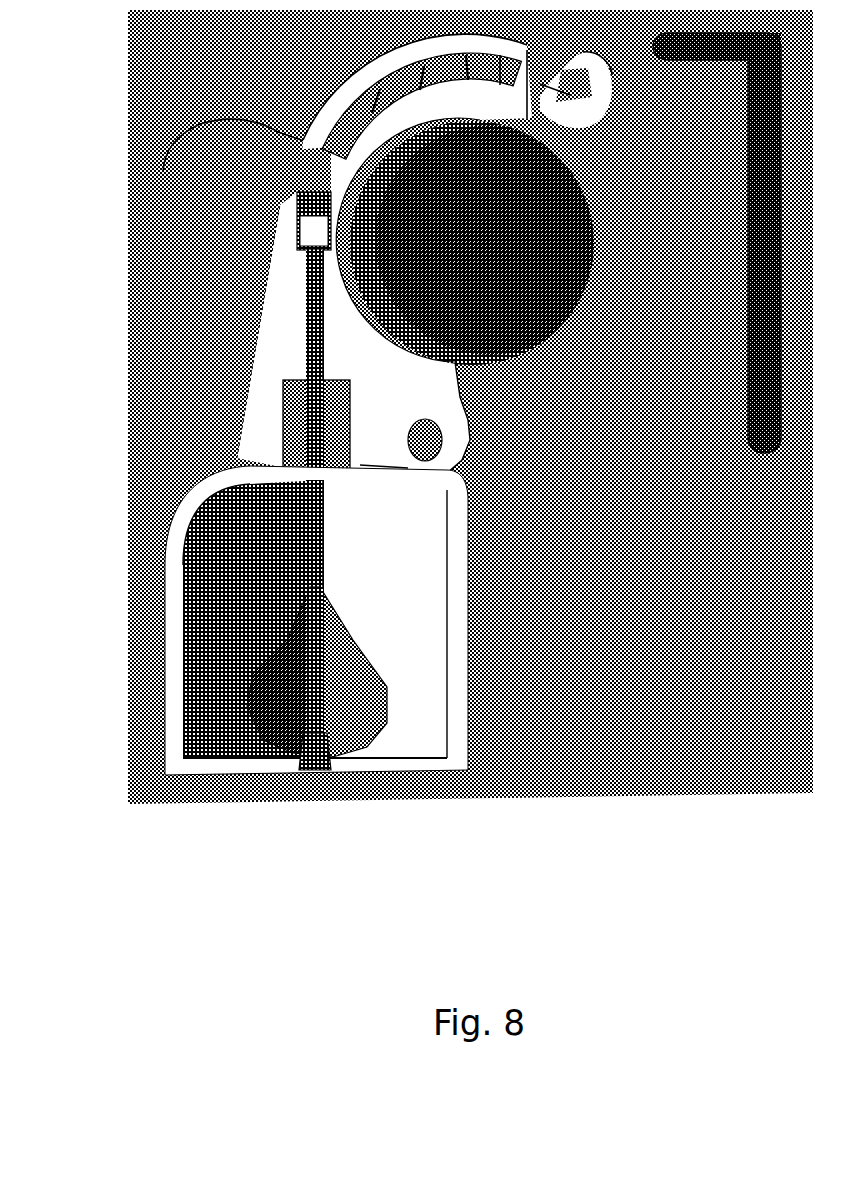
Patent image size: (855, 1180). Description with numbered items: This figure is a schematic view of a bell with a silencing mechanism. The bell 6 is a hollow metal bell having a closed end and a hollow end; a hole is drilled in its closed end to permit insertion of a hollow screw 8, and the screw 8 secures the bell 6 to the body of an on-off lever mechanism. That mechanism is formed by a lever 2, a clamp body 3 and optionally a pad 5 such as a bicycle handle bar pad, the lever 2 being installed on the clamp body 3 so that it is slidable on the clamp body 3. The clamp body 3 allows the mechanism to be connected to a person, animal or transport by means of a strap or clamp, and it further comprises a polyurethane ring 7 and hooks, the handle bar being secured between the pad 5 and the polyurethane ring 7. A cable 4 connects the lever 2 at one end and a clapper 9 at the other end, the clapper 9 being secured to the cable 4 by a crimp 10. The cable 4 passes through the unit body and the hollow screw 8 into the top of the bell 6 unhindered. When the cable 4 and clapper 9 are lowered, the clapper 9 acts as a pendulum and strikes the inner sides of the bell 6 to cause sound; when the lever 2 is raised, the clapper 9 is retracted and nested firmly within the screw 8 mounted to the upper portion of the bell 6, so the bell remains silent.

The lever 2 is at (205, 147).
The clamp body 3 is at (428, 120).
The cable 4 is at (312, 236).
The pad 5 is at (385, 322).
The bell 6 is at (131, 795).
The polyurethane ring 7 is at (752, 400).
The hollow screw 8 is at (272, 493).
The clapper 9 is at (265, 683).
The crimp 10 is at (302, 758).